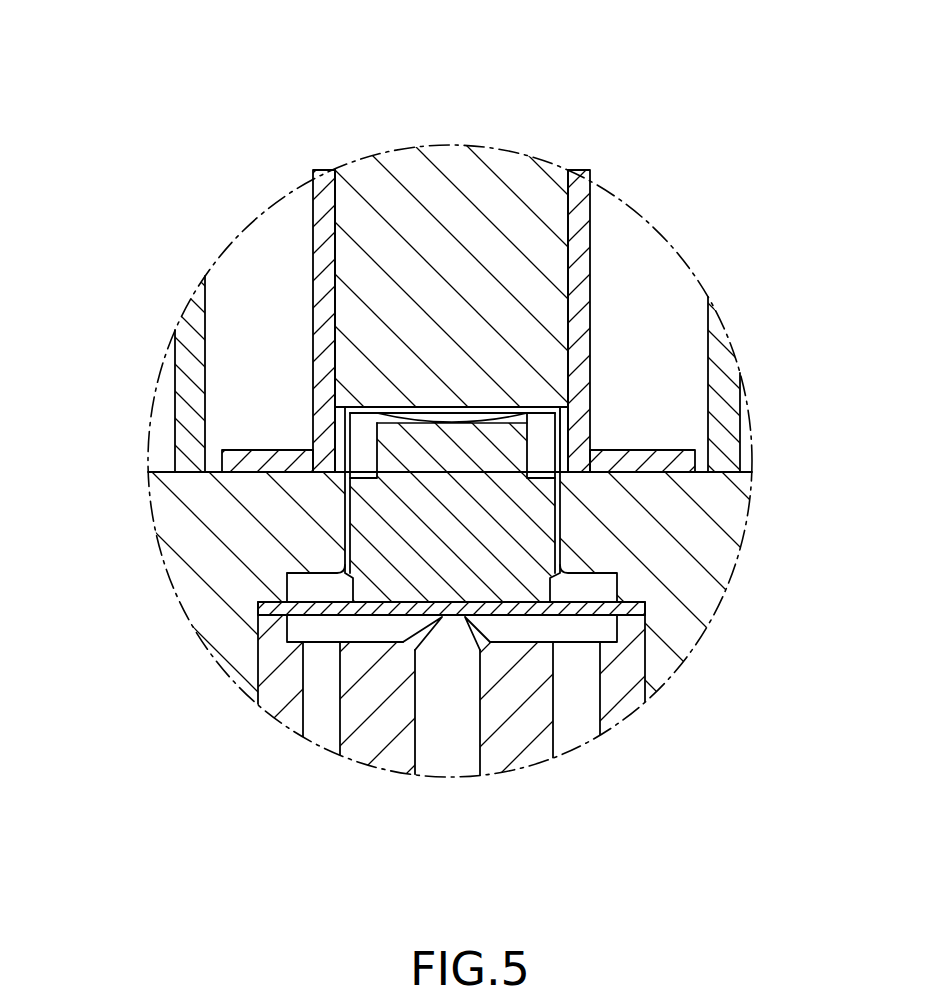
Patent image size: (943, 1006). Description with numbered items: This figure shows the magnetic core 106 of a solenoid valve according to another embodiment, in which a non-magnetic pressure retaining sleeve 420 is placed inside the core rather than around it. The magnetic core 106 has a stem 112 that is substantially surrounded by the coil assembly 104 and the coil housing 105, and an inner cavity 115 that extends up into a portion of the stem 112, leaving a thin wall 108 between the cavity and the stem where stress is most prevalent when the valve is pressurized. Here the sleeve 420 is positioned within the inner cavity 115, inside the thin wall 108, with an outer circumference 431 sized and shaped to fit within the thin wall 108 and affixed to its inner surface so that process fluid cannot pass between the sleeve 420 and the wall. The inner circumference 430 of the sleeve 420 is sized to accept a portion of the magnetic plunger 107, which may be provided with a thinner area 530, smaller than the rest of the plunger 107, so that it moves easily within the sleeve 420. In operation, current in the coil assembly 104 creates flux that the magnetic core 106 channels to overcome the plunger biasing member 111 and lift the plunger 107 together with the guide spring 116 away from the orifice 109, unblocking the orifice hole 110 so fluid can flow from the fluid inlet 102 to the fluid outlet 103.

The fluid inlet 102 is at (318, 732).
The fluid outlet 103 is at (463, 748).
The coil assembly 104 is at (283, 275).
The coil housing 105 is at (726, 375).
The magnetic core 106 is at (452, 200).
The magnetic plunger 107 is at (530, 535).
The thin wall 108 is at (563, 447).
The orifice 109 is at (465, 628).
The orifice hole 110 is at (443, 620).
The plunger biasing member 111 is at (375, 414).
The stem 112 is at (543, 187).
The inner cavity 115 is at (307, 583).
The guide spring 116 is at (322, 612).
The non-magnetic pressure retaining sleeve 420 is at (541, 438).
The inner circumference 430 is at (525, 440).
The outer circumference 431 is at (567, 443).
The thinner area 530 is at (430, 447).